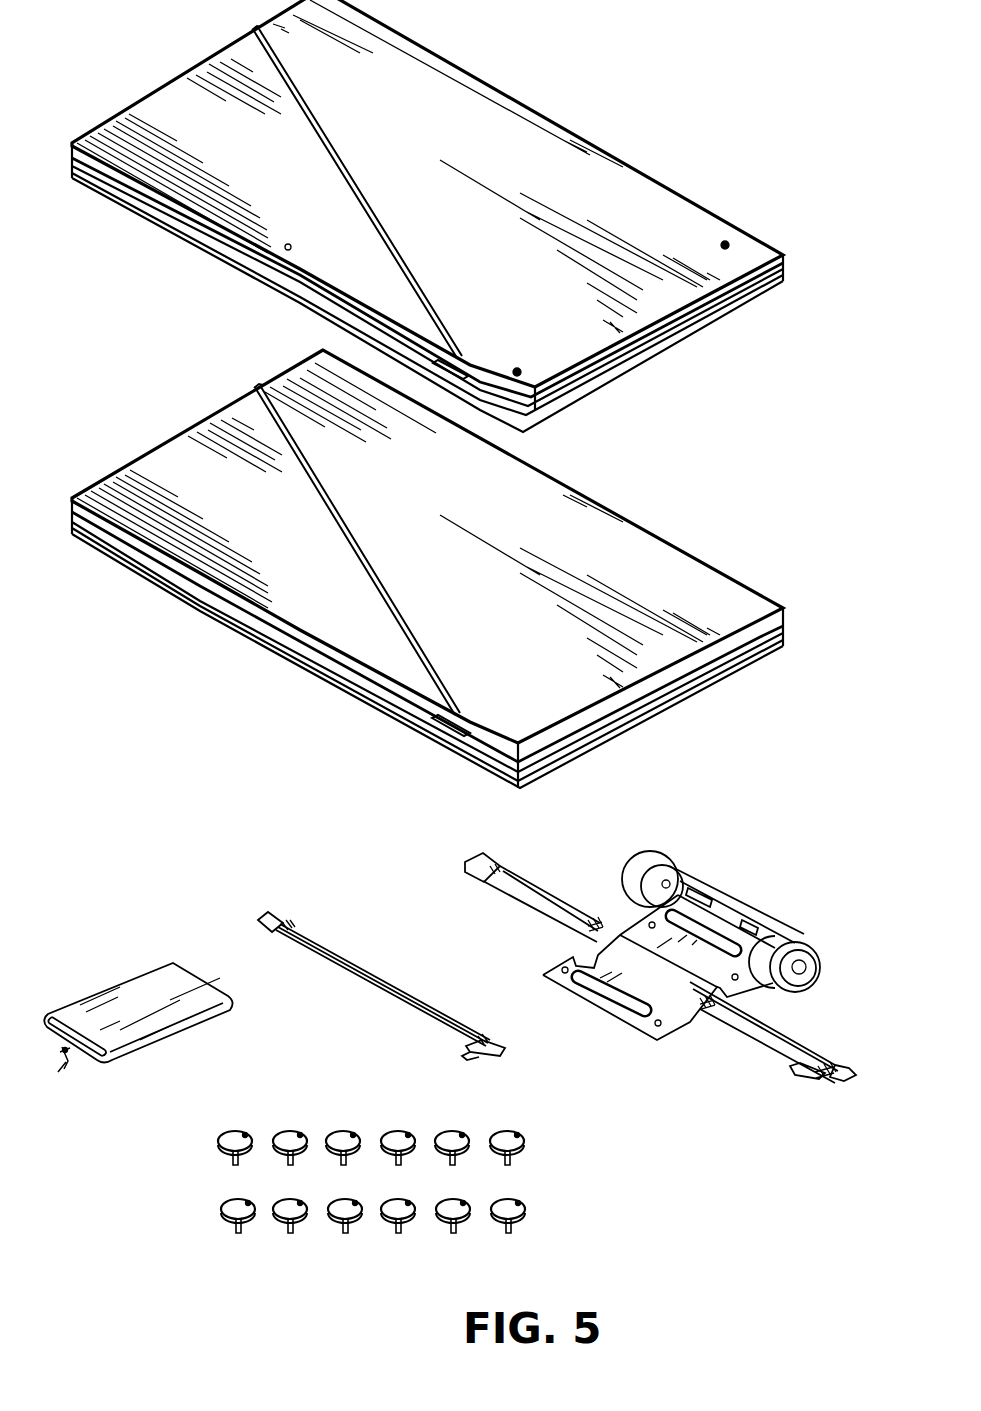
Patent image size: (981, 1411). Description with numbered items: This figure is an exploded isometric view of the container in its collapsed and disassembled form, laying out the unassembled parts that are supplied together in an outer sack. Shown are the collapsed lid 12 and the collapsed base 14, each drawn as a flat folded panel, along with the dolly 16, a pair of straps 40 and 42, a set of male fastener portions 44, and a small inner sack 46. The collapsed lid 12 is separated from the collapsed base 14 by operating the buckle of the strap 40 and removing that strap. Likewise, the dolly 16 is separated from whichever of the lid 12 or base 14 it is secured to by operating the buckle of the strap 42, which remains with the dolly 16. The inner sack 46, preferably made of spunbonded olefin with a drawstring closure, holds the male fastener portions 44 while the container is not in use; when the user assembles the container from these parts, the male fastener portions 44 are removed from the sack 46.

The collapsed lid 12 is at (168, 240).
The collapsed base 14 is at (166, 588).
The dolly 16 is at (568, 958).
The strap 40 is at (368, 972).
The strap 42 is at (790, 1040).
The male fastener portions 44 is at (526, 1148).
The inner sack 46 is at (222, 1018).